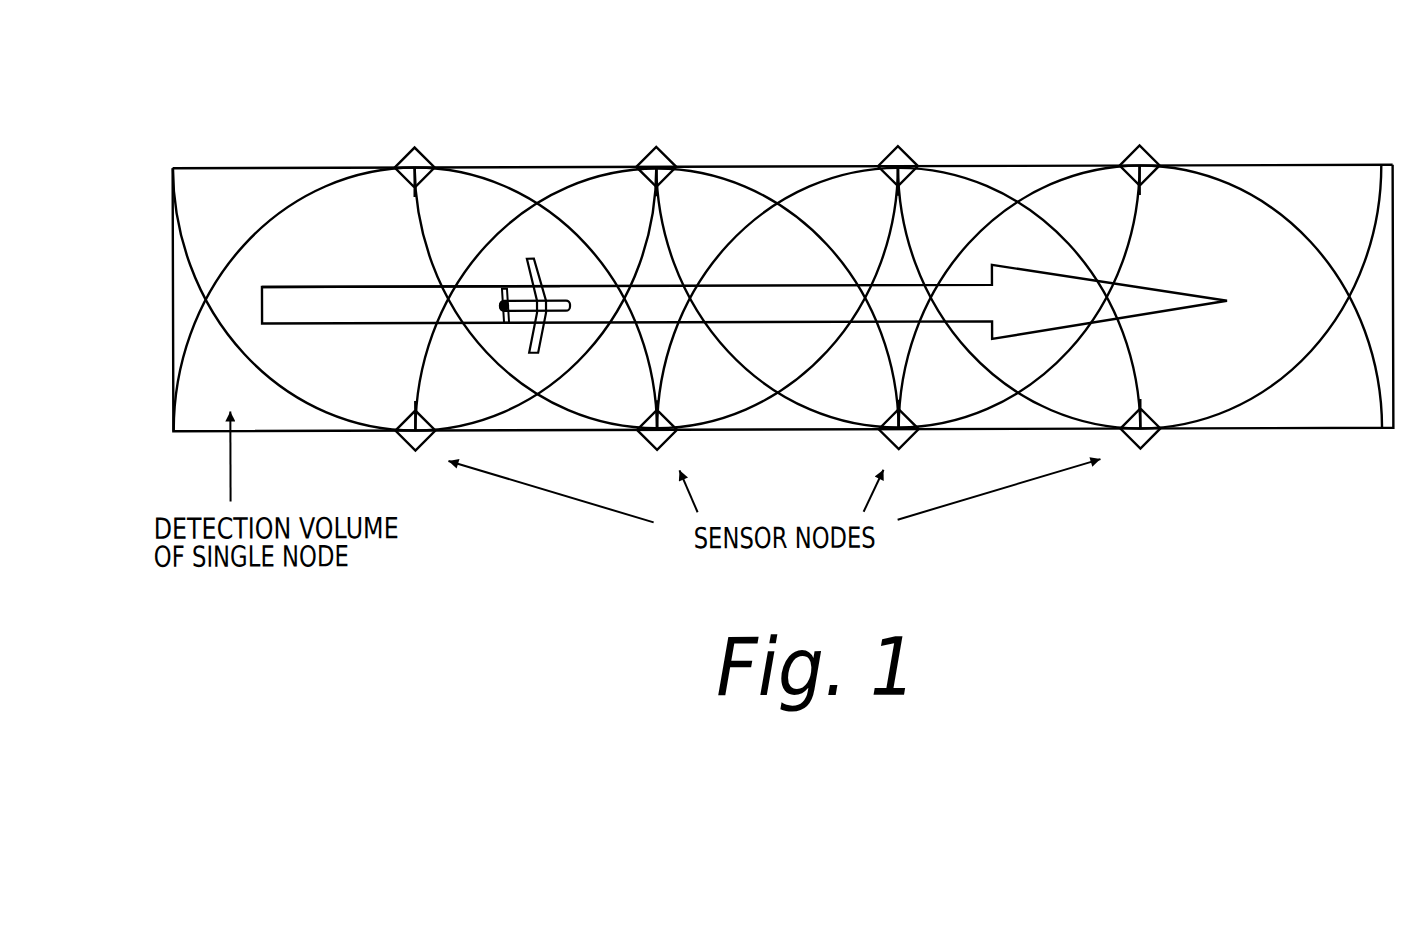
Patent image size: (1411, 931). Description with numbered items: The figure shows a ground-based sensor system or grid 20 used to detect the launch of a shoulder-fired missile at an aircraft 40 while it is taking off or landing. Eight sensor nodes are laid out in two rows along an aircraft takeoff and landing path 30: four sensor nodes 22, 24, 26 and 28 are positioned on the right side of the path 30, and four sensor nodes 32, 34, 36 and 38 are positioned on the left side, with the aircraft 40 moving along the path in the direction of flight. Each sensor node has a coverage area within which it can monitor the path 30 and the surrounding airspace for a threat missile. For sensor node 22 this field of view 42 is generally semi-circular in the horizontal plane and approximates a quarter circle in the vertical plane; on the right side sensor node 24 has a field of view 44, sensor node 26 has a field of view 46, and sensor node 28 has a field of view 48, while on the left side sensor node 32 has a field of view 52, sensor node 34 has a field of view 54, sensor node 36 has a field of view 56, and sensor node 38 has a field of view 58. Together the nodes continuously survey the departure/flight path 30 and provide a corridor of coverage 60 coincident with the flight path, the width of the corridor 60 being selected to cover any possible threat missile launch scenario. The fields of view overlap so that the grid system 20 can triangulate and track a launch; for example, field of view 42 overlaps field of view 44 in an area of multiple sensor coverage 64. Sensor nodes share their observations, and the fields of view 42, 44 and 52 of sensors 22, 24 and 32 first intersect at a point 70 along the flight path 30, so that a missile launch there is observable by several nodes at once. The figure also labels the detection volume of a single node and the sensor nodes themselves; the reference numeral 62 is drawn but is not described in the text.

The ground-based sensor system or grid 20 is at (386, 112).
The sensor node 22 is at (416, 451).
The sensor node 24 is at (660, 450).
The sensor node 26 is at (903, 451).
The sensor node 28 is at (1149, 452).
The aircraft takeoff and landing path 30 is at (763, 283).
The sensor node 32 is at (424, 152).
The sensor node 34 is at (666, 150).
The sensor node 36 is at (910, 153).
The sensor node 38 is at (1150, 153).
The aircraft 40 is at (452, 286).
The field of view 42 is at (183, 355).
The field of view 44 is at (528, 258).
The field of view 46 is at (827, 183).
The field of view 48 is at (1063, 183).
The field of view 52 is at (187, 258).
The field of view 54 is at (747, 410).
The field of view 56 is at (950, 431).
The field of view 58 is at (1238, 407).
The corridor of coverage 60 is at (290, 166).
The flight path boundary 62 is at (327, 285).
The area of multiple sensor coverage 64 is at (535, 418).
The point 70 is at (452, 286).